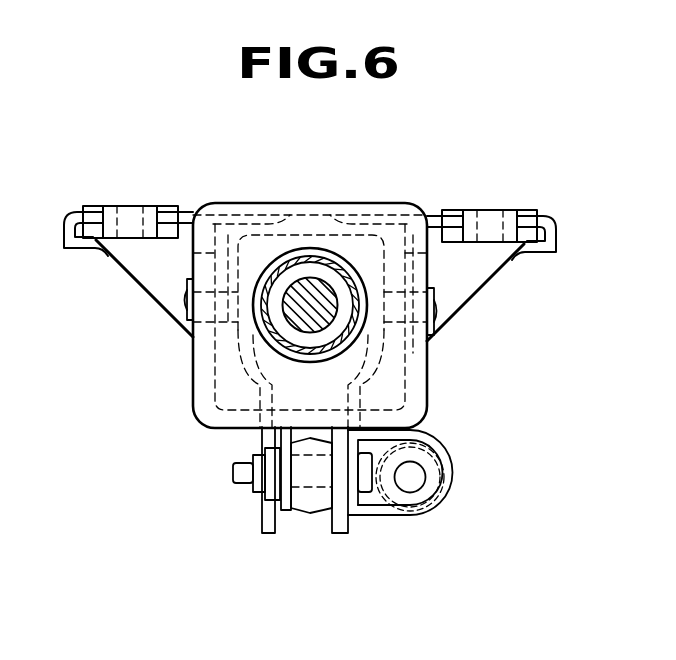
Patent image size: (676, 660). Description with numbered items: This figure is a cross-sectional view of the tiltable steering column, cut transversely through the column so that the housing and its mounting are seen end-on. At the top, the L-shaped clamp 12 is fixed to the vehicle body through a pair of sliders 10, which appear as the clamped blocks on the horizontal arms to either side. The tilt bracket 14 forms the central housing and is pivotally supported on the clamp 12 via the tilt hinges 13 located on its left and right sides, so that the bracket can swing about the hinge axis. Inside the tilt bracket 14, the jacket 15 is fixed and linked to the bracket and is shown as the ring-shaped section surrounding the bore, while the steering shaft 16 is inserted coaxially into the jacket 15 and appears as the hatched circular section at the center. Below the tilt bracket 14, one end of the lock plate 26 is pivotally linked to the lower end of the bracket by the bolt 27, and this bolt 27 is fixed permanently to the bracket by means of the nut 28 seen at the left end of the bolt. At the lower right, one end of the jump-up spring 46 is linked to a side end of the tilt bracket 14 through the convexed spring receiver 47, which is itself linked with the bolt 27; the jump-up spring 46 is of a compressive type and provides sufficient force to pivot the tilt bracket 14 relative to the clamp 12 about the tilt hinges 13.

The slider 10 is at (112, 205).
The clamp 12 is at (195, 211).
The tilt hinge 13 is at (187, 302).
The tilt bracket 14 is at (412, 384).
The jacket 15 is at (348, 262).
The steering shaft 16 is at (305, 290).
The lock plate 26 is at (313, 497).
The bolt 27 is at (367, 490).
The nut 28 is at (253, 488).
The jump-up spring 46 is at (430, 462).
The convexed spring receiver 47 is at (398, 518).